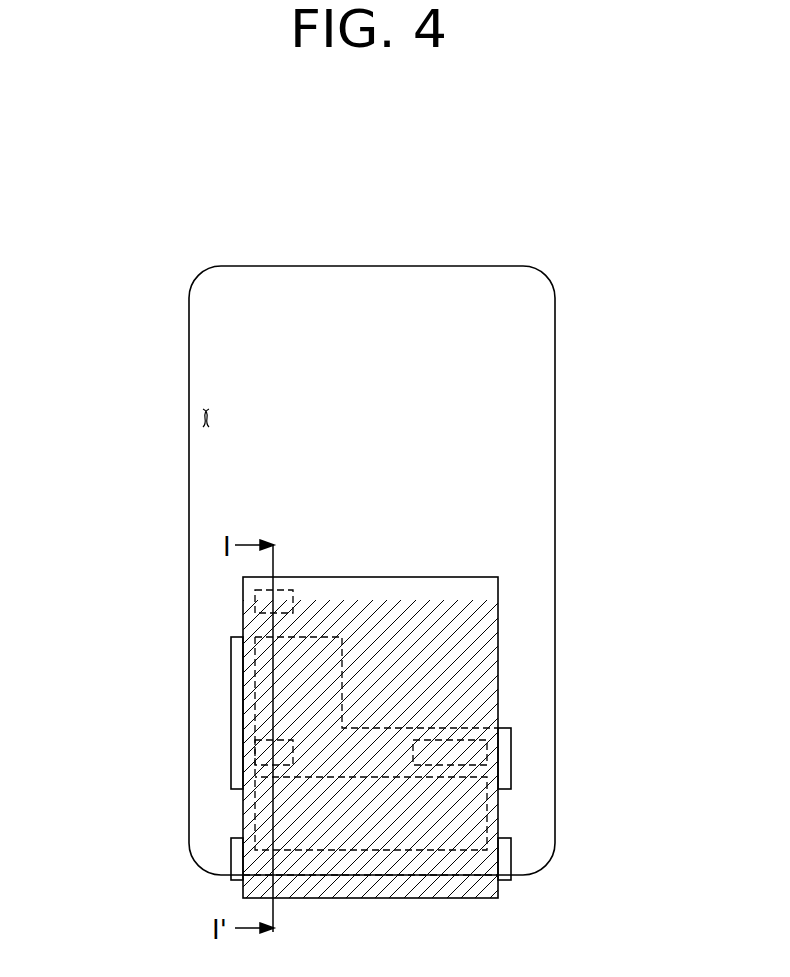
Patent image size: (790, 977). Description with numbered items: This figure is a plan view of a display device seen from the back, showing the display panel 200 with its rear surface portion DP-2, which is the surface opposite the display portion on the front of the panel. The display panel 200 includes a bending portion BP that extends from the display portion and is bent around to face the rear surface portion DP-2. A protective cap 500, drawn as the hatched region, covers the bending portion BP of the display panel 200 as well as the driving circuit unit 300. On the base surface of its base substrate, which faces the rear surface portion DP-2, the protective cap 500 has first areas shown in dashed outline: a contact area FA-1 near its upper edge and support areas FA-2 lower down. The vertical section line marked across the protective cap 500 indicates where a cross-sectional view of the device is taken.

The display panel 200 is at (208, 345).
The rear surface portion DP-2 is at (202, 418).
The protective cap 500 is at (487, 660).
The contact area FA-1 is at (258, 600).
The driving circuit unit 300 is at (237, 685).
The support area FA-2 is at (258, 752).
The bending portion BP is at (237, 855).